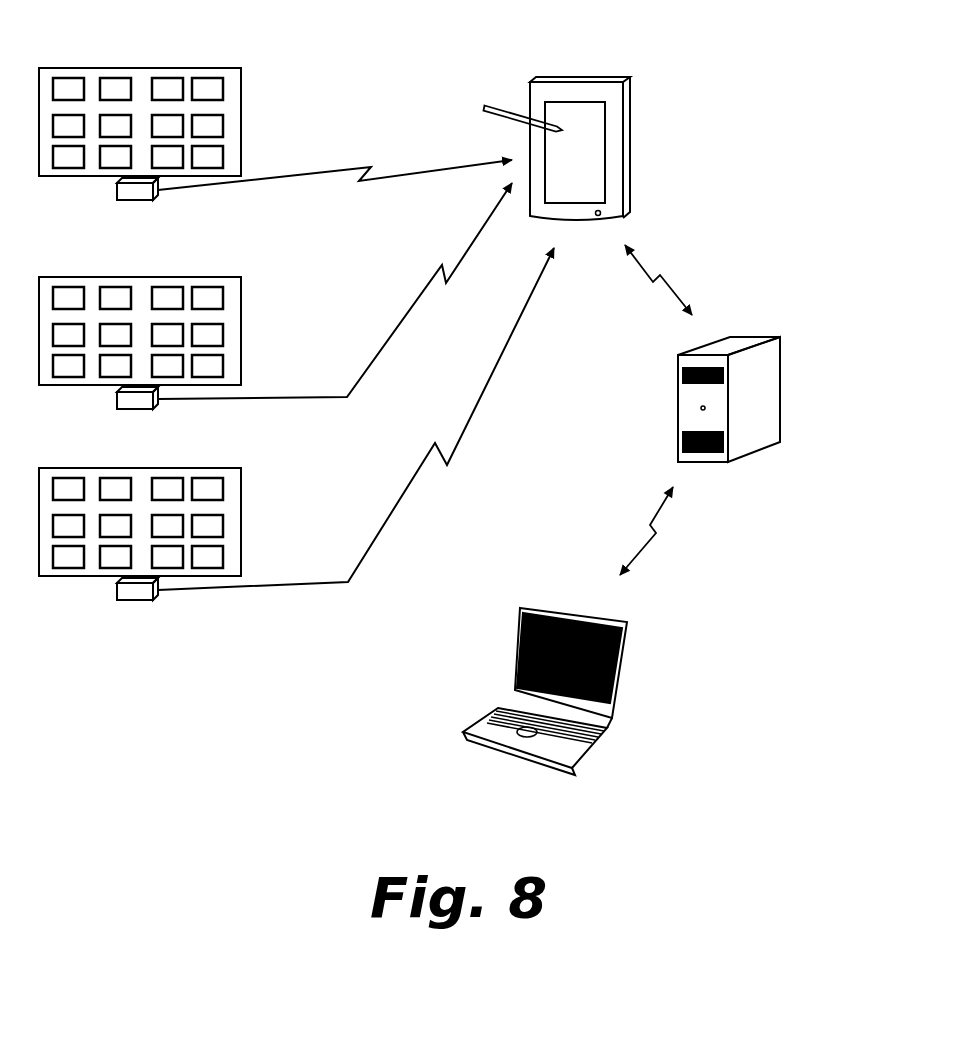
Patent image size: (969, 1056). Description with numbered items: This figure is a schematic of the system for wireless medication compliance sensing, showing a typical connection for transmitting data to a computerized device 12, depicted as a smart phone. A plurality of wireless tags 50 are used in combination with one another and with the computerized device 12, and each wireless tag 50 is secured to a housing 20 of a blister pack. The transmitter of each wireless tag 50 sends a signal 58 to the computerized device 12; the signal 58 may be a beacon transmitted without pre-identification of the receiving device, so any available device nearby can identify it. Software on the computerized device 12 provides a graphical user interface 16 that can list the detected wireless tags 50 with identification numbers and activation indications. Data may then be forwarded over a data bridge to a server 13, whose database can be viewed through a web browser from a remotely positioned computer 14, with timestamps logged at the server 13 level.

The computerized device 12 is at (590, 75).
The server 13 is at (782, 372).
The remotely positioned computer 14 is at (622, 648).
The graphical user interface 16 is at (590, 160).
The housing 20 is at (183, 68).
The wireless tag 50 is at (128, 193).
The signal 58 is at (397, 176).